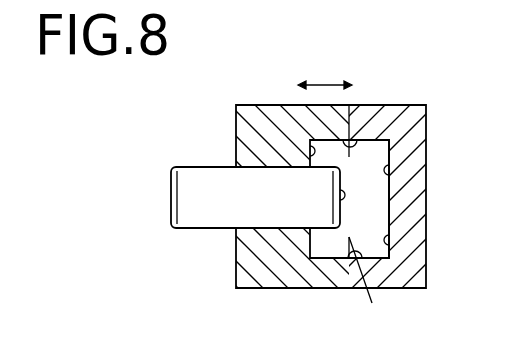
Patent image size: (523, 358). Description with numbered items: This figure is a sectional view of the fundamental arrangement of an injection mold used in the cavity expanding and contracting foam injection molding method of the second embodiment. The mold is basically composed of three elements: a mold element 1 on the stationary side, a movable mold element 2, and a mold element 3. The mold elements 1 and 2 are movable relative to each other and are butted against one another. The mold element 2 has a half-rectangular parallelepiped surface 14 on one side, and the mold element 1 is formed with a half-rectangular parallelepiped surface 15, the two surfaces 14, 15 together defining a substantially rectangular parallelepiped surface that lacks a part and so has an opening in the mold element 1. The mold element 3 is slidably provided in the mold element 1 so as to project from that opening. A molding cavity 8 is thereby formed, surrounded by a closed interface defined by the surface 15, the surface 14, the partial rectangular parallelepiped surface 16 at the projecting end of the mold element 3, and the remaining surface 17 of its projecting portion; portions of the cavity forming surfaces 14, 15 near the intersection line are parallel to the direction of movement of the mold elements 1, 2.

The mold element 1 is at (240, 277).
The mold element 2 is at (413, 277).
The mold element 3 is at (203, 176).
The molding cavity 8 is at (380, 212).
The half-rectangular parallelepiped surface 14 is at (387, 172).
The half-rectangular parallelepiped surface 15 is at (308, 150).
The partial rectangular parallelepiped surface 16 is at (348, 197).
The remaining surface of the projecting portion 17 is at (327, 222).